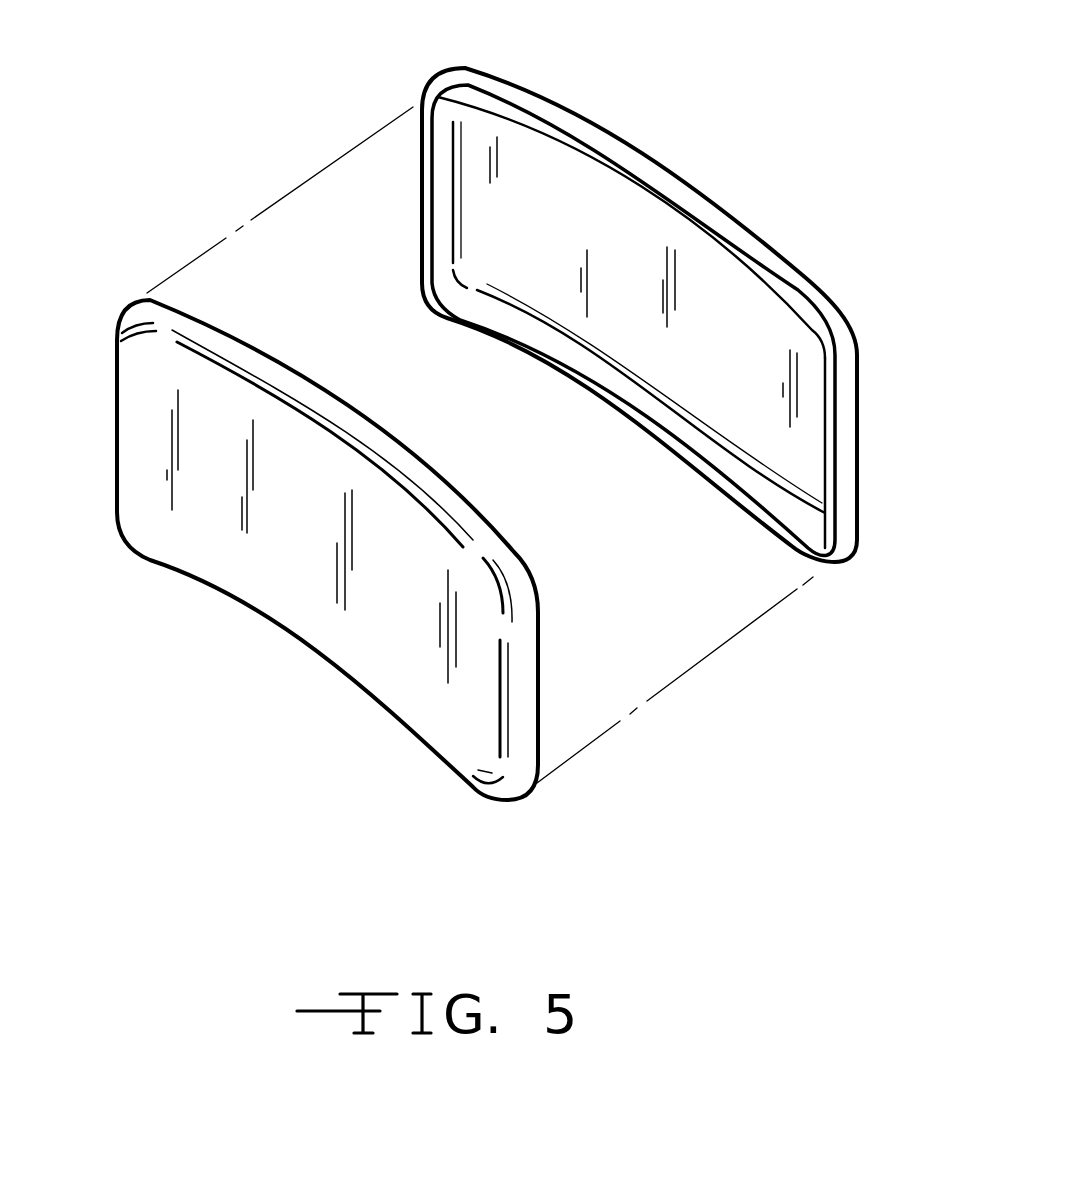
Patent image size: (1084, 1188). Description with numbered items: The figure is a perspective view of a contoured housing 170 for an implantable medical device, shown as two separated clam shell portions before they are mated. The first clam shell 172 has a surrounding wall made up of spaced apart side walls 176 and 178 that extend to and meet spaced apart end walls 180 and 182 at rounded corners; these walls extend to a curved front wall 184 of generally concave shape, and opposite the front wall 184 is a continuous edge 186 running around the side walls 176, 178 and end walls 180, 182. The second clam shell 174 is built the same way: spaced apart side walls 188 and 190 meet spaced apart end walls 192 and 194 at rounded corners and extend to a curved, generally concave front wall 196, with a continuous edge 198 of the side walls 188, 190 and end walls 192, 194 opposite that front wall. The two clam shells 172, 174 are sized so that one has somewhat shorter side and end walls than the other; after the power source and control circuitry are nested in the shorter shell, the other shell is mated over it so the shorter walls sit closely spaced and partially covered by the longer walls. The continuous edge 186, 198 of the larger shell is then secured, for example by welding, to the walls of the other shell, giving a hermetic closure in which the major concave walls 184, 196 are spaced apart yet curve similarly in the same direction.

The contoured housing 170 is at (691, 303).
The first clam shell portion 172 is at (813, 290).
The second clam shell portion 174 is at (410, 453).
The side wall 176 is at (752, 250).
The side wall 178 is at (650, 400).
The end wall 180 is at (845, 413).
The end wall 182 is at (447, 203).
The curved front wall 184 is at (620, 221).
The continuous edge 186 is at (560, 105).
The side wall 188 is at (478, 530).
The side wall 190 is at (360, 688).
The end wall 192 is at (525, 670).
The end wall 194 is at (117, 445).
The curved front wall 196 is at (243, 560).
The continuous edge 198 is at (323, 390).